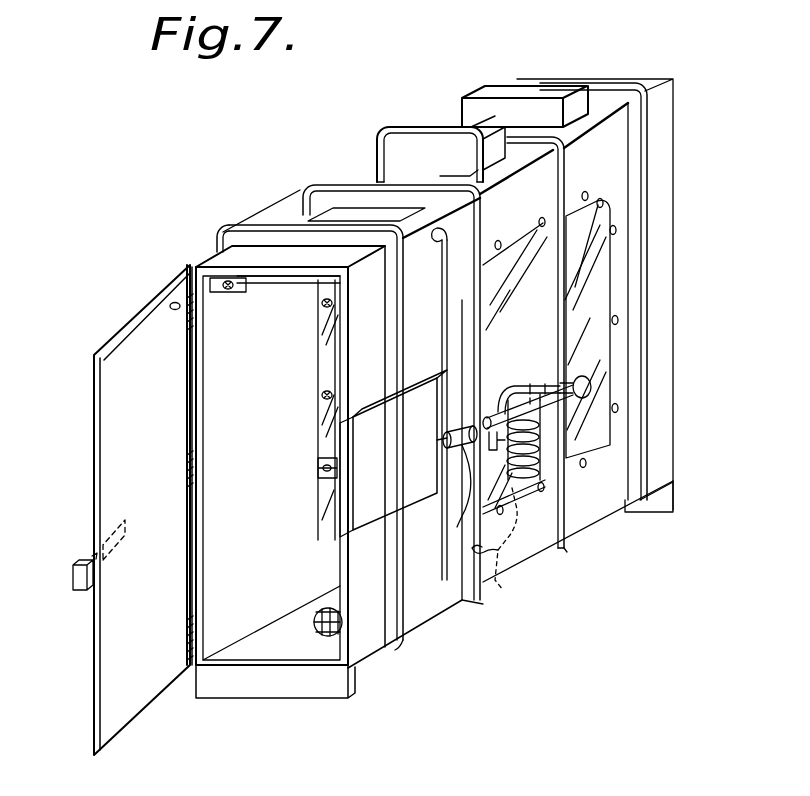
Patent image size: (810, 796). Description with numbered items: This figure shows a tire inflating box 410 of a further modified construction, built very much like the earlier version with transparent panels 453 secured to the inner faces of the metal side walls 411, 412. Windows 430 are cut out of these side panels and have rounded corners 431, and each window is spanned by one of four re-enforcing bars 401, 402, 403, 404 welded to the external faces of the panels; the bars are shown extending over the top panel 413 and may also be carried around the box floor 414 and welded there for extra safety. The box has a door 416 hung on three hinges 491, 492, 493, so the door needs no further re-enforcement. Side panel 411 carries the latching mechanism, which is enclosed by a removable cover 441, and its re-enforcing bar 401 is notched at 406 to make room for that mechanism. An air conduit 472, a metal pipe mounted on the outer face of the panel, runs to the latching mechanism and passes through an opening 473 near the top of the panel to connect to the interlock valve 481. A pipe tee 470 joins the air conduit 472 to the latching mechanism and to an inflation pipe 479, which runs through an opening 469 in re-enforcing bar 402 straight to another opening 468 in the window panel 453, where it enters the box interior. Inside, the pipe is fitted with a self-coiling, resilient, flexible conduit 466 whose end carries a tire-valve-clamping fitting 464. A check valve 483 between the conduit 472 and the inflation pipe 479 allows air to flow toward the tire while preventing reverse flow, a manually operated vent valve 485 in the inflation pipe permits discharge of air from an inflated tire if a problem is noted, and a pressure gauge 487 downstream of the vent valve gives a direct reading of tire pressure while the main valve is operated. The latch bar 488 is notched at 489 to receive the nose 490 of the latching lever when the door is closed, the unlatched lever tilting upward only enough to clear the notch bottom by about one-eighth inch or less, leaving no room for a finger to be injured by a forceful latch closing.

The re-enforcing bar 401 is at (398, 644).
The re-enforcing bar 402 is at (470, 593).
The re-enforcing bar 403 is at (565, 550).
The re-enforcing bar 404 is at (640, 510).
The notch 406 is at (383, 392).
The tire inflating box 410 is at (213, 250).
The side panel 411 is at (530, 548).
The side panel 412 is at (286, 588).
The top panel 413 is at (303, 215).
The box floor 414 is at (292, 650).
The door 416 is at (178, 598).
The window 430 is at (527, 237).
The rounded corner 431 is at (610, 193).
The removable cover 441 is at (433, 466).
The transparent panel 453 is at (328, 365).
The tire-valve-clamping fitting 464 is at (492, 565).
The self-coiling resilient flexible conduit 466 is at (560, 470).
The opening 468 is at (535, 380).
The opening 469 is at (485, 400).
The pipe tee 470 is at (452, 458).
The air conduit 472 is at (441, 362).
The opening 473 is at (437, 230).
The inflation pipe 479 is at (596, 260).
The interlock valve 481 is at (224, 293).
The check valve 483 is at (450, 500).
The vent valve 485 is at (503, 457).
The pressure gauge 487 is at (588, 374).
The latch bar 488 is at (76, 591).
The notch 489 is at (95, 556).
The nose 490 is at (325, 477).
The hinge 491 is at (196, 632).
The hinge 492 is at (195, 473).
The hinge 493 is at (190, 298).